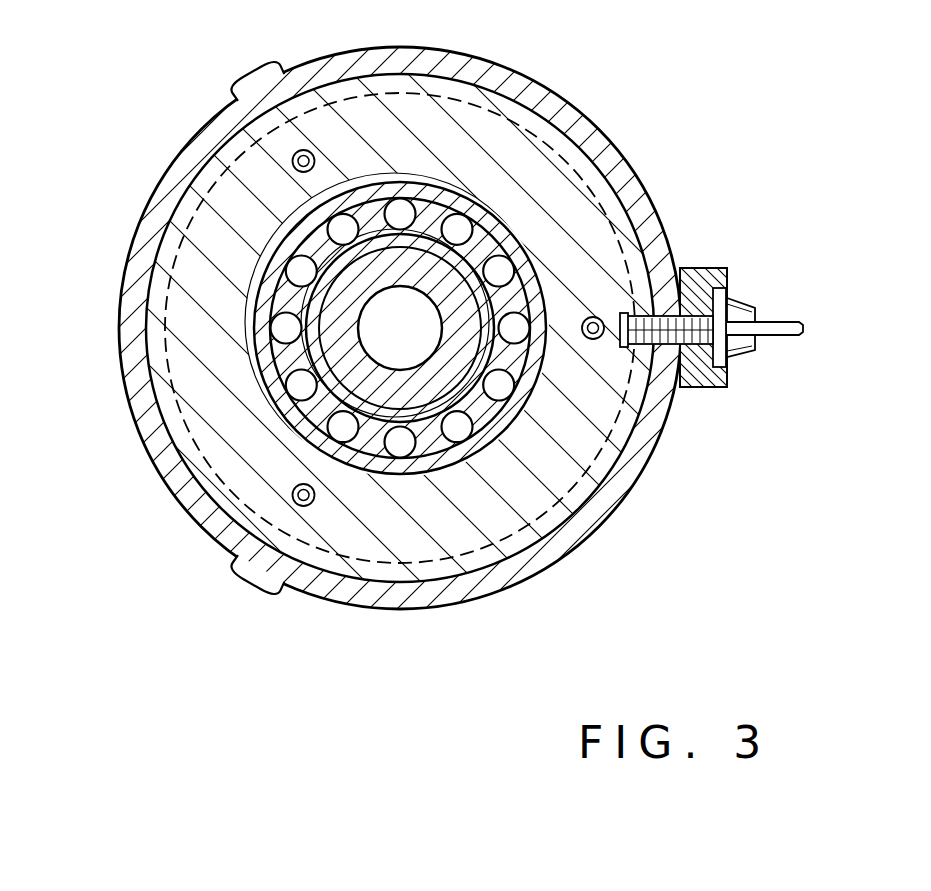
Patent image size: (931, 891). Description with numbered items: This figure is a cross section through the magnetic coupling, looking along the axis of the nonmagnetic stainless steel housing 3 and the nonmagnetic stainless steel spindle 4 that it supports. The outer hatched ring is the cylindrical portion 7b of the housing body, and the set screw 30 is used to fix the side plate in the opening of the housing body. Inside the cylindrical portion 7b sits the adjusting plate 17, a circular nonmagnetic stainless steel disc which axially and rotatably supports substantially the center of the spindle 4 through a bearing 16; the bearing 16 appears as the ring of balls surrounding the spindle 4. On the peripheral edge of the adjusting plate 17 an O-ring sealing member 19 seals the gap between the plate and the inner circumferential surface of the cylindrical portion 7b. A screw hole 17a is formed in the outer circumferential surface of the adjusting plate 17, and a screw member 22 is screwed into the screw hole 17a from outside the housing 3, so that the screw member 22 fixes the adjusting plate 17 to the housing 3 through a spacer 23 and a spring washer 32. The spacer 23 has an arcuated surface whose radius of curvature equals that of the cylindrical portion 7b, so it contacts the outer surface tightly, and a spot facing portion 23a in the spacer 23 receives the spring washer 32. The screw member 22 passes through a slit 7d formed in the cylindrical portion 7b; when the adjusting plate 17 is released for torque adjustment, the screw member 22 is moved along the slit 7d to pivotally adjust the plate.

The housing 3 is at (117, 339).
The spindle 4 is at (325, 322).
The cylindrical portion 7b is at (433, 608).
The slit 7d is at (648, 208).
The bearing 16 is at (298, 382).
The adjusting plate 17 is at (483, 533).
The screw hole 17a is at (667, 360).
The sealing member 19 is at (580, 178).
The screw member 22 is at (788, 336).
The spacer 23 is at (702, 268).
The spot facing portion 23a is at (729, 370).
The set screw 30 is at (256, 76).
The spring washer 32 is at (720, 313).